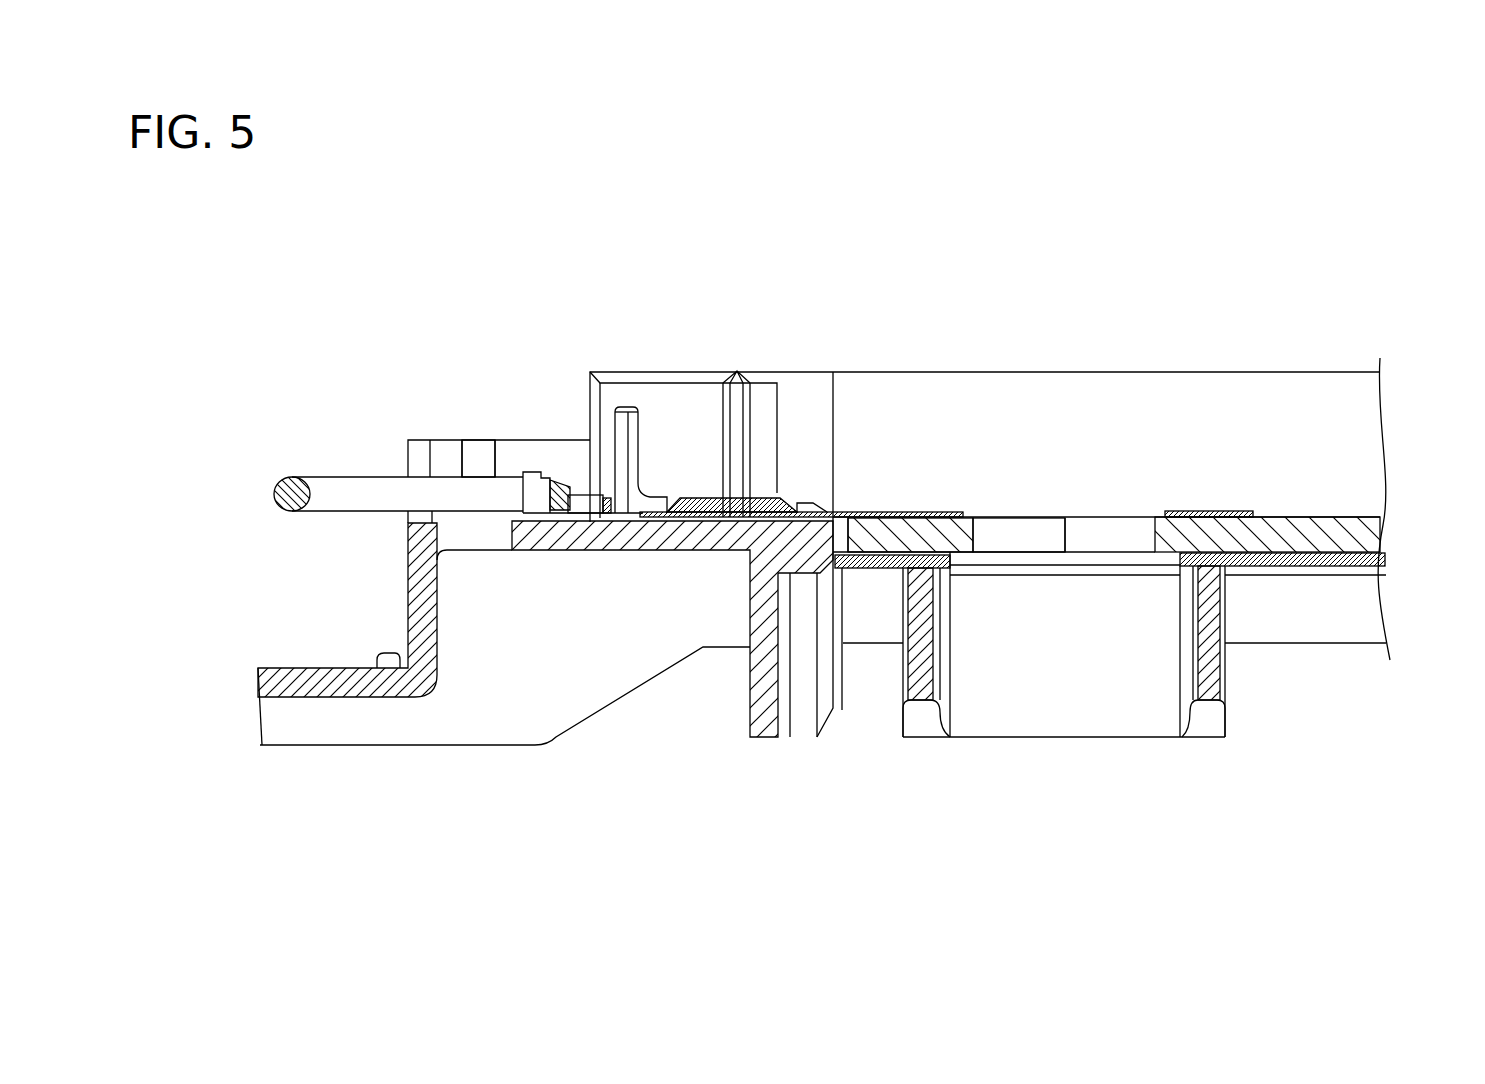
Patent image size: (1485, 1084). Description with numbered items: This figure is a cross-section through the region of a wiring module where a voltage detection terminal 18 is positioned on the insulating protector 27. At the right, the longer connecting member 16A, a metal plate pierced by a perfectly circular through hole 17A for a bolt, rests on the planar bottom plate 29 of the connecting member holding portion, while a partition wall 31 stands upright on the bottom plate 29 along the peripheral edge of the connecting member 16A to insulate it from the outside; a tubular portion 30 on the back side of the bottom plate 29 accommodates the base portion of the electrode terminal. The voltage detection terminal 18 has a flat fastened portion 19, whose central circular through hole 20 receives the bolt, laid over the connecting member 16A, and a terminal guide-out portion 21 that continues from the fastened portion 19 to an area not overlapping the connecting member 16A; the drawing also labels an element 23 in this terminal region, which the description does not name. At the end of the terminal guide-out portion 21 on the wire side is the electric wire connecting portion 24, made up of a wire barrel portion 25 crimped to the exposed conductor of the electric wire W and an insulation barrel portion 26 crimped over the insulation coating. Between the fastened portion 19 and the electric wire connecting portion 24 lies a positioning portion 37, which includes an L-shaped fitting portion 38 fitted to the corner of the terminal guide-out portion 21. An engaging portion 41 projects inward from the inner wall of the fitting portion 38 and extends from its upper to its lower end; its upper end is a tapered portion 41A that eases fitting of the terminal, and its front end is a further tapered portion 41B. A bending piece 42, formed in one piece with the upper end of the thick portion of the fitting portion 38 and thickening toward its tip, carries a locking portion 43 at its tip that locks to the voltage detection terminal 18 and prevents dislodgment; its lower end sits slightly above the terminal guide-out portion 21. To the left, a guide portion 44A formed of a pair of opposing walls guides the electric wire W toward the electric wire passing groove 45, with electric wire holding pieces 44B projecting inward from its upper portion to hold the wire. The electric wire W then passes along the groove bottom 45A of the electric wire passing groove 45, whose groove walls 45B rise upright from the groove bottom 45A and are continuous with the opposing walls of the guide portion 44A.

The electric wire W is at (338, 495).
The connecting member 16A is at (1328, 515).
The through hole 17A is at (1005, 515).
The voltage detection terminal 18 is at (920, 512).
The fastened portion 19 is at (1237, 511).
The through hole 20 is at (977, 543).
The terminal guide-out portion 21 is at (830, 512).
The terminal fitting 23 is at (793, 500).
The electric wire connecting portion 24 is at (571, 398).
The wire barrel portion 25 is at (581, 495).
The insulation barrel portion 26 is at (532, 472).
The insulating protector 27 is at (984, 479).
The bottom plate 29 is at (1323, 562).
The tubular portion 30 is at (1222, 665).
The partition wall 31 is at (1197, 400).
The positioning portion 37 is at (762, 381).
The fitting portion 38 is at (616, 368).
The engaging portion 41 is at (759, 395).
The tapered portion 41A is at (737, 371).
The tapered portion 41B is at (723, 407).
The bending piece 42 is at (655, 432).
The locking portion 43 is at (678, 495).
The guide portion 44A is at (503, 450).
The electric wire holding piece 44B is at (477, 450).
The electric wire passing groove 45 is at (489, 621).
The groove bottom 45A is at (262, 665).
The groove wall 45B is at (400, 603).